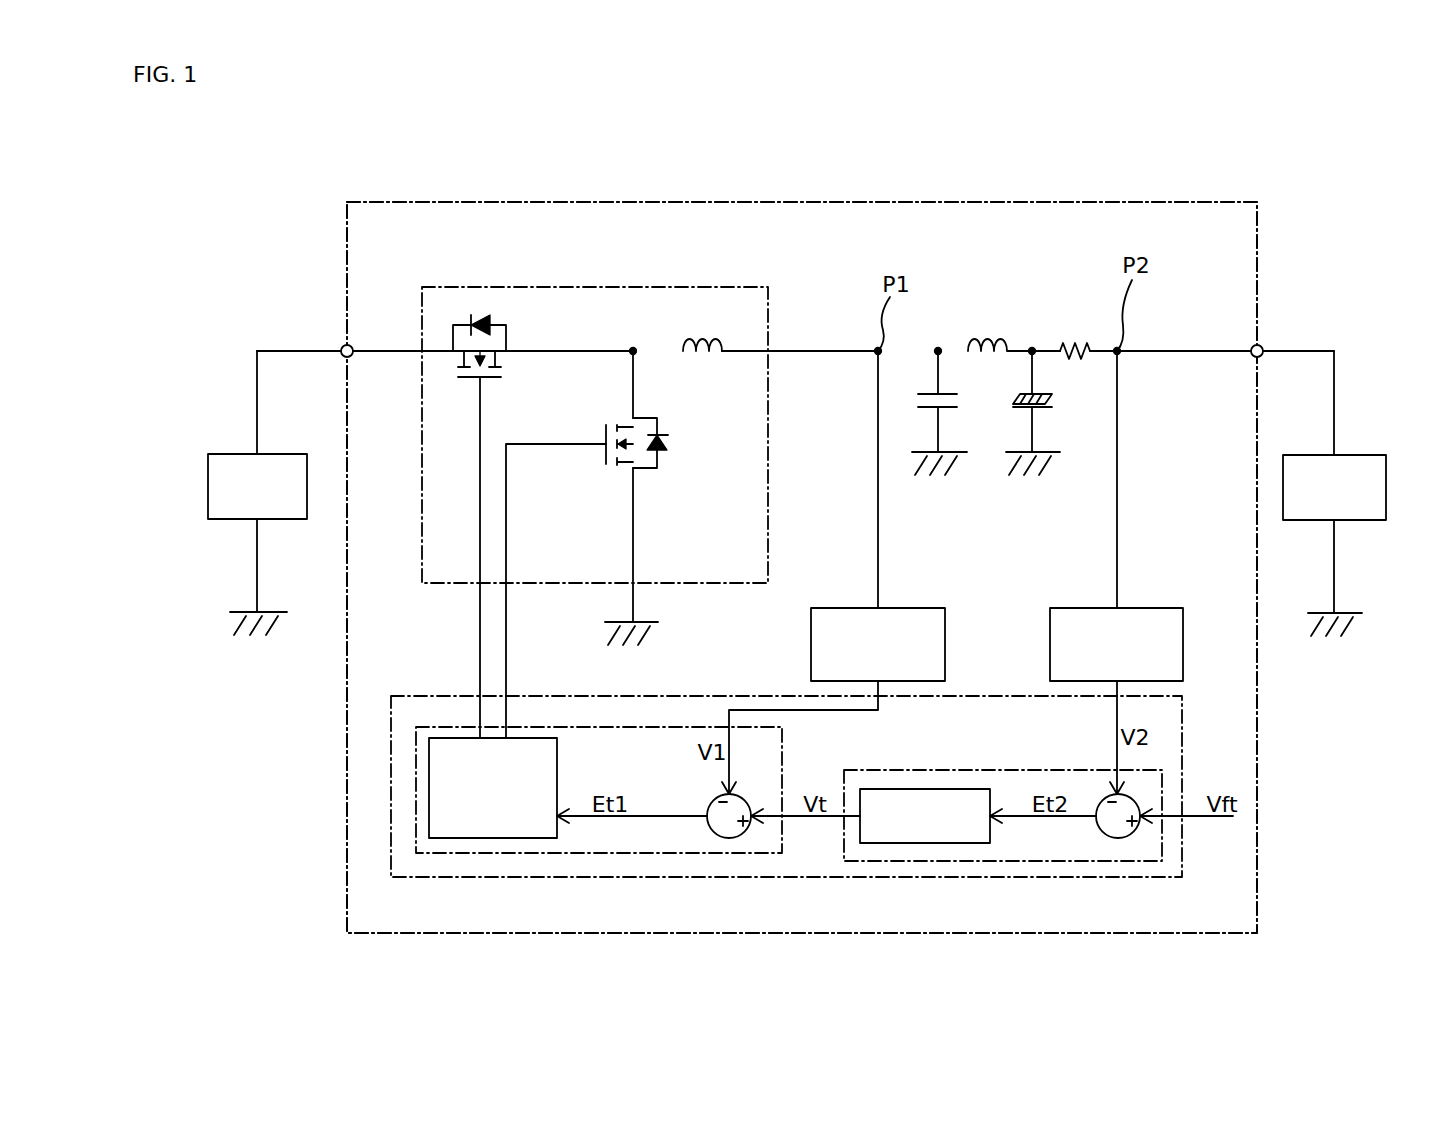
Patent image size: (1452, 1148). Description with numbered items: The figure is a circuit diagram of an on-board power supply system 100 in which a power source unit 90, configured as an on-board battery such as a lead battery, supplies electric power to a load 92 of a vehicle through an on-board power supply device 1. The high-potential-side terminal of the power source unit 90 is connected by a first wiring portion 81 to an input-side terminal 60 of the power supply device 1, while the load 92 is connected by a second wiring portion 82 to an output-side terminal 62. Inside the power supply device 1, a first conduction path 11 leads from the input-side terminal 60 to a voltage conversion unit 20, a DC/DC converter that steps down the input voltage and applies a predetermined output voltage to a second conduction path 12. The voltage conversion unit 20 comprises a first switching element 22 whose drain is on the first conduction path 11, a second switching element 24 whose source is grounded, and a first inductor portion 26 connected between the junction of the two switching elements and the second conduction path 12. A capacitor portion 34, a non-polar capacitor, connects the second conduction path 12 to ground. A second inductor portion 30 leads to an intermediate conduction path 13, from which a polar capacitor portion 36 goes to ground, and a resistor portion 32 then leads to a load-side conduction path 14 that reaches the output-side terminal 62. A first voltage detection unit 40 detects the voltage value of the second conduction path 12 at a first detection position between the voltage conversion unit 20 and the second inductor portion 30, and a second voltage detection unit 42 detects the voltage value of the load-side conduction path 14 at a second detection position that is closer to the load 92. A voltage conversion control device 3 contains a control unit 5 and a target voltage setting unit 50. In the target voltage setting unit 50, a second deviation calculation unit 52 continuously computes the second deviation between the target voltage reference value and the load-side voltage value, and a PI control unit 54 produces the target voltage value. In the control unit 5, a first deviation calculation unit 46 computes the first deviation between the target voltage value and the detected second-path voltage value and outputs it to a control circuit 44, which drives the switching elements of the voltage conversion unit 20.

The on-board power supply system 100 is at (1044, 141).
The on-board power supply device 1 is at (1160, 201).
The voltage conversion control device 3 is at (1182, 728).
The control unit 5 is at (415, 799).
The first conduction path 11 is at (393, 351).
The second conduction path 12 is at (826, 351).
The intermediate conduction path 13 is at (1017, 348).
The load-side conduction path 14 is at (1160, 351).
The voltage conversion unit 20 is at (735, 287).
The first switching element 22 is at (492, 318).
The second switching element 24 is at (648, 470).
The first inductor portion 26 is at (713, 363).
The second inductor portion 30 is at (980, 338).
The resistor portion 32 is at (1075, 341).
The capacitor portion 34 is at (955, 402).
The capacitor portion 36 is at (1045, 407).
The first voltage detection unit 40 is at (920, 608).
The second voltage detection unit 42 is at (1160, 608).
The control circuit 44 is at (557, 752).
The first deviation calculation unit 46 is at (715, 835).
The target voltage setting unit 50 is at (1128, 862).
The second deviation calculation unit 52 is at (1132, 834).
The PI control unit 54 is at (925, 843).
The input-side terminal 60 is at (341, 346).
The output-side terminal 62 is at (1262, 345).
The first wiring portion 81 is at (257, 372).
The second wiring portion 82 is at (1336, 386).
The power source unit 90 is at (208, 485).
The load 92 is at (1365, 455).